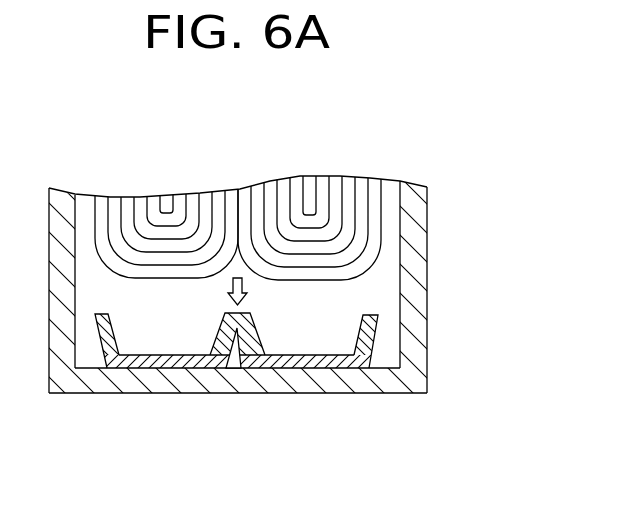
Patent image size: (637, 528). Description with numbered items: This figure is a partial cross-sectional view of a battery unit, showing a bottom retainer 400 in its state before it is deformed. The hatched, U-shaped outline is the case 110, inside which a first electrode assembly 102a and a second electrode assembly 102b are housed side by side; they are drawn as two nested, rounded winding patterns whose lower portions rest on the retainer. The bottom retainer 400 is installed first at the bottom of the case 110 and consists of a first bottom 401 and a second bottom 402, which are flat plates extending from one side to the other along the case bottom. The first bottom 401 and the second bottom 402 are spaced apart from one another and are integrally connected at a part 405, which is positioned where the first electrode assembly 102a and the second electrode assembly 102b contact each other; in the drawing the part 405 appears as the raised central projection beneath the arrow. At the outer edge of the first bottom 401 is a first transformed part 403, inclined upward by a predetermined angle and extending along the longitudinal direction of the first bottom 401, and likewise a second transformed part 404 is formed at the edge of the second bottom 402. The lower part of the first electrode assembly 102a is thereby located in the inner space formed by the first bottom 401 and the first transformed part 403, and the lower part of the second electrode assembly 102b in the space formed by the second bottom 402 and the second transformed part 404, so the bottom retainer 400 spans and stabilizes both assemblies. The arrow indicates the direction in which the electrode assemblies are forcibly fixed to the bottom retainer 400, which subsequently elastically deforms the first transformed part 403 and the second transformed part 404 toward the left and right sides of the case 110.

The case 110 is at (427, 247).
The first electrode assembly 102a is at (167, 210).
The second electrode assembly 102b is at (309, 212).
The bottom retainer 400 is at (235, 406).
The first bottom 401 is at (160, 358).
The second bottom 402 is at (315, 362).
The first transformed part 403 is at (106, 336).
The second transformed part 404 is at (366, 336).
The part 405 is at (236, 330).